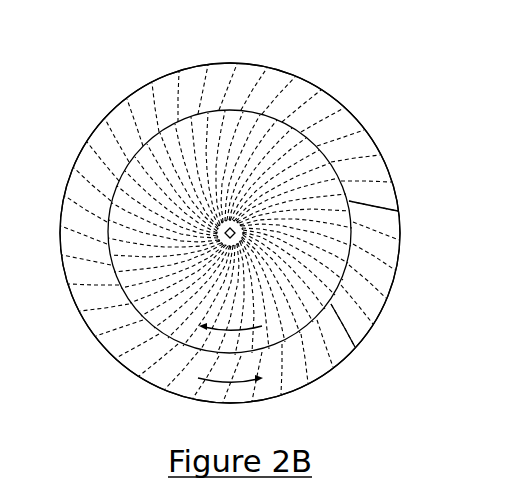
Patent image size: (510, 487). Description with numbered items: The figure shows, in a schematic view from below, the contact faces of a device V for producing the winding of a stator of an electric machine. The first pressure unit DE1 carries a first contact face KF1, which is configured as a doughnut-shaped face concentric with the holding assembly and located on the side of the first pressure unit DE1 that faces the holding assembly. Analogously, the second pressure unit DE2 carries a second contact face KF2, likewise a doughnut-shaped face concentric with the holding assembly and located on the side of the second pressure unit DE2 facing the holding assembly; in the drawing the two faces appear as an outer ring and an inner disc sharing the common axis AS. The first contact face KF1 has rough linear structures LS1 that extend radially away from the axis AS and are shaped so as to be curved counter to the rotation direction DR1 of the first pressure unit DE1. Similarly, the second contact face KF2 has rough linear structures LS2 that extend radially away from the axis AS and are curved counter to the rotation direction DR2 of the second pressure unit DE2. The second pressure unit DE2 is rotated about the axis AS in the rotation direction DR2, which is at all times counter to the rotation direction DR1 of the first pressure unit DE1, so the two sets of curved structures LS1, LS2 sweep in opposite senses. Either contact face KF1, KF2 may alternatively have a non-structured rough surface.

The device V is at (316, 50).
The first pressure unit DE1 is at (128, 97).
The second pressure unit DE2 is at (130, 165).
The first contact face KF1 is at (312, 104).
The second contact face KF2 is at (316, 162).
The axis AS is at (226, 229).
The rough linear structures LS1 is at (372, 279).
The rough linear structures LS2 is at (362, 338).
The rotation direction DR1 is at (230, 373).
The rotation direction DR2 is at (230, 321).